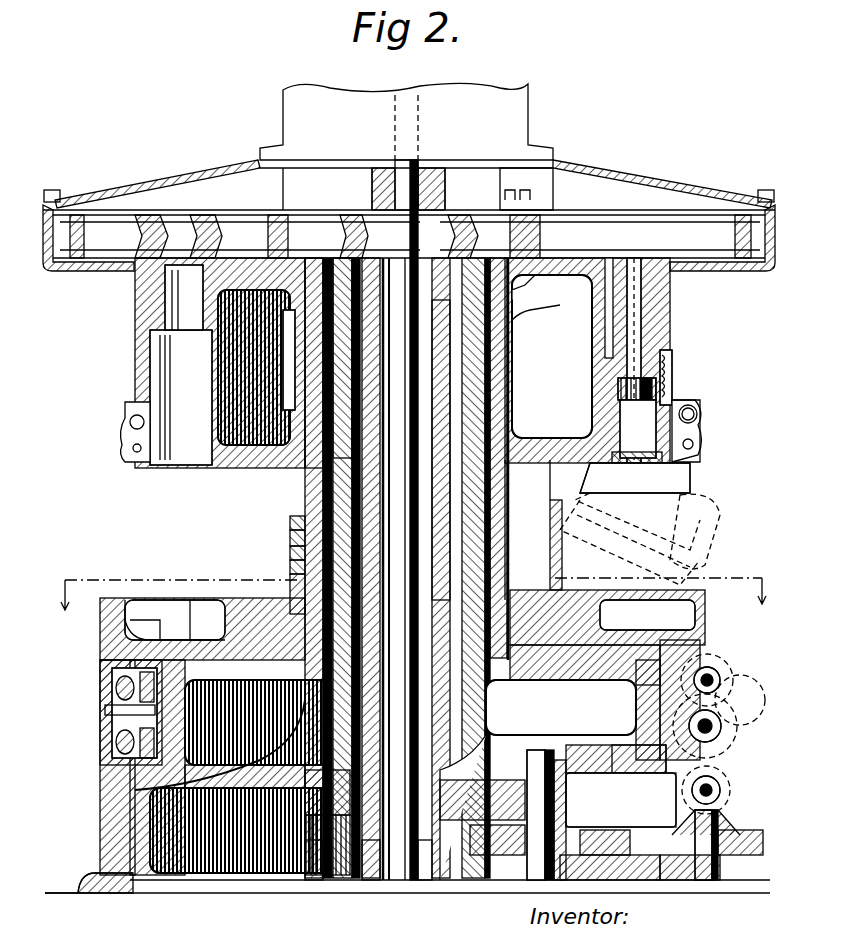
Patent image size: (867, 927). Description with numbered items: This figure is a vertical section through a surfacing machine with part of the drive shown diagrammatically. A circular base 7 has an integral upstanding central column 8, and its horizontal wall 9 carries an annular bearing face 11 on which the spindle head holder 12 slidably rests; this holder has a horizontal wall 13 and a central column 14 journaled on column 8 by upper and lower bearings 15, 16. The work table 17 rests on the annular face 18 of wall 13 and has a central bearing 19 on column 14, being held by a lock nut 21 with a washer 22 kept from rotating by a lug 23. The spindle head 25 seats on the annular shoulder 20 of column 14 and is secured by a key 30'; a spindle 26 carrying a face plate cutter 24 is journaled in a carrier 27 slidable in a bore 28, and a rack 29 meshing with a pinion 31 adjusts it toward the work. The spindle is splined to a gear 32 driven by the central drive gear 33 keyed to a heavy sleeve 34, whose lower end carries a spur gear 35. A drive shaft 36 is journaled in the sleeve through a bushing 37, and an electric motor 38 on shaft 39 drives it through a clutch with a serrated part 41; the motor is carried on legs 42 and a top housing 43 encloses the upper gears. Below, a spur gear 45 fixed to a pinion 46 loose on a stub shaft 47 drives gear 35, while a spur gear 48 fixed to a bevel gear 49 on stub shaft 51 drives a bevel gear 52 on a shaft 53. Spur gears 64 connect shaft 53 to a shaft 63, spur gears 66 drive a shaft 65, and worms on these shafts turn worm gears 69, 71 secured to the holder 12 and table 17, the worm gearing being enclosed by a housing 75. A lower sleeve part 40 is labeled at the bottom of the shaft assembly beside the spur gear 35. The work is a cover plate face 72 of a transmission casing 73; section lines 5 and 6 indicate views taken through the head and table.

The section line 5 is at (30, 213).
The section line 6 is at (412, 605).
The circular base 7 is at (128, 824).
The central column 8 is at (332, 480).
The horizontal wall 9 is at (582, 758).
The annular bearing face 11 is at (615, 752).
The spindle head holder 12 is at (108, 690).
The horizontal wall 13 is at (542, 675).
The central column 14 is at (306, 498).
The upper bearing 15 is at (325, 240).
The lower bearing 16 is at (290, 590).
The work table 17 is at (160, 605).
The annular face 18 is at (195, 608).
The central bearing 19 is at (290, 571).
The annular shoulder 20 is at (306, 468).
The lock nut 21 is at (290, 522).
The washer 22 is at (290, 556).
The lug 23 is at (290, 546).
The face plate cutter 24 is at (690, 475).
The spindle head 25 is at (587, 360).
The spindle 26 is at (665, 340).
The carrier 27 is at (668, 432).
The bore 28 is at (213, 363).
The rack 29 is at (668, 380).
The key 30' is at (537, 305).
The pinion 31 is at (690, 408).
The gear 32 is at (135, 235).
The central drive gear 33 is at (478, 232).
The sleeve 34 is at (440, 492).
The spur gear 35 is at (335, 840).
The drive shaft 36 is at (408, 870).
The bushing 37 is at (370, 222).
The electric motor 38 is at (406, 121).
The shaft 39 is at (398, 168).
The sleeve 40 is at (385, 875).
The serrated part 41 is at (445, 180).
The legs 42 is at (555, 190).
The top housing 43 is at (700, 200).
The spur gear 45 is at (492, 850).
The pinion 46 is at (565, 798).
The stub shaft 47 is at (532, 880).
The spur gear 48 is at (740, 832).
The bevel gear 49 is at (725, 812).
The stub shaft 51 is at (702, 880).
The bevel gear 52 is at (592, 232).
The shaft 53 is at (712, 790).
The shaft 63 is at (712, 724).
The spur gears 64 is at (728, 775).
The shaft 65 is at (712, 678).
The spur gears 66 is at (740, 692).
The worm gear 69 is at (735, 740).
The worm gear 71 is at (712, 665).
The cover plate face 72 is at (630, 539).
The transmission casing 73 is at (722, 520).
The housing 75 is at (108, 716).